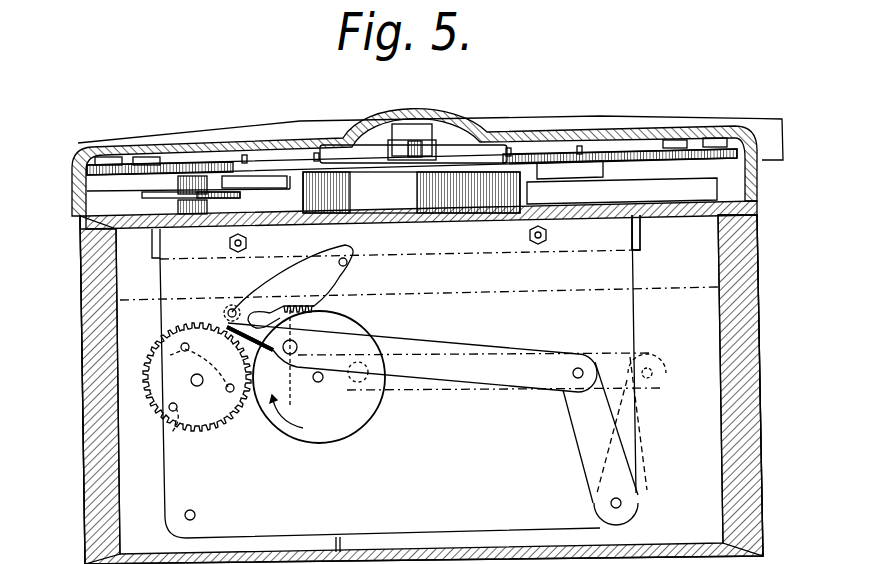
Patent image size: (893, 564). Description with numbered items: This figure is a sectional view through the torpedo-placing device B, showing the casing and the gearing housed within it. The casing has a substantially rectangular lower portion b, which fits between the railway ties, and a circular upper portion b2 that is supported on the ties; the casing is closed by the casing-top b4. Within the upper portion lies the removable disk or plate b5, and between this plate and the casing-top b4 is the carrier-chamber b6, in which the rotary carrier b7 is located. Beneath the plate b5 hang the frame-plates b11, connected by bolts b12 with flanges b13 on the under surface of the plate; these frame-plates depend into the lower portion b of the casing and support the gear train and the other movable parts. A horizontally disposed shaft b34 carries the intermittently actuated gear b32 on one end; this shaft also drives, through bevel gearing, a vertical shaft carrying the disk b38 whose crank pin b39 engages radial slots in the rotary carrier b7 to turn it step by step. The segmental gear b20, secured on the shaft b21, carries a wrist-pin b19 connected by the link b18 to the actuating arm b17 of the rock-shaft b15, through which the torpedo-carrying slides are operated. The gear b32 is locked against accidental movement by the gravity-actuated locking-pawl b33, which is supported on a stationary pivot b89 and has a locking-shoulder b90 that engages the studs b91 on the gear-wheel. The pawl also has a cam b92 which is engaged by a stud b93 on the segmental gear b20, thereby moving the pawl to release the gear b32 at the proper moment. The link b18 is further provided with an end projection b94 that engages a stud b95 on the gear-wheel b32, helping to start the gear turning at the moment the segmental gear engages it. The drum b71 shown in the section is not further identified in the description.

The device B is at (394, 389).
The lower portion of casing b is at (82, 438).
The upper portion of casing b2 is at (82, 248).
The casing-top b4 is at (601, 118).
The disk or plate b5 is at (88, 224).
The carrier-chamber b6 is at (72, 190).
The rotary carrier b7 is at (352, 170).
The drum b71 is at (411, 189).
The frame-plates b11 is at (396, 383).
The bolts b12 is at (228, 243).
The flanges b13 is at (641, 240).
The rock-shaft b15 is at (622, 503).
The actuating arm b17 is at (603, 437).
The link b18 is at (443, 368).
The wrist-pin b19 is at (296, 343).
The segmental gear b20 is at (365, 440).
The shaft b21 is at (352, 383).
The intermittently actuated gear b32 is at (205, 430).
The gravity-actuated locking-pawl b33 is at (292, 279).
The horizontally disposed shaft b34 is at (191, 382).
The disk b38 is at (188, 196).
The crank pin b39 is at (184, 178).
The stationary pivot b89 is at (228, 310).
The locking-shoulder b90 is at (278, 397).
The studs b91 is at (152, 443).
The cam b92 is at (269, 300).
The stud b93 is at (318, 383).
The end projection b94 is at (237, 305).
The stud b95 is at (182, 345).